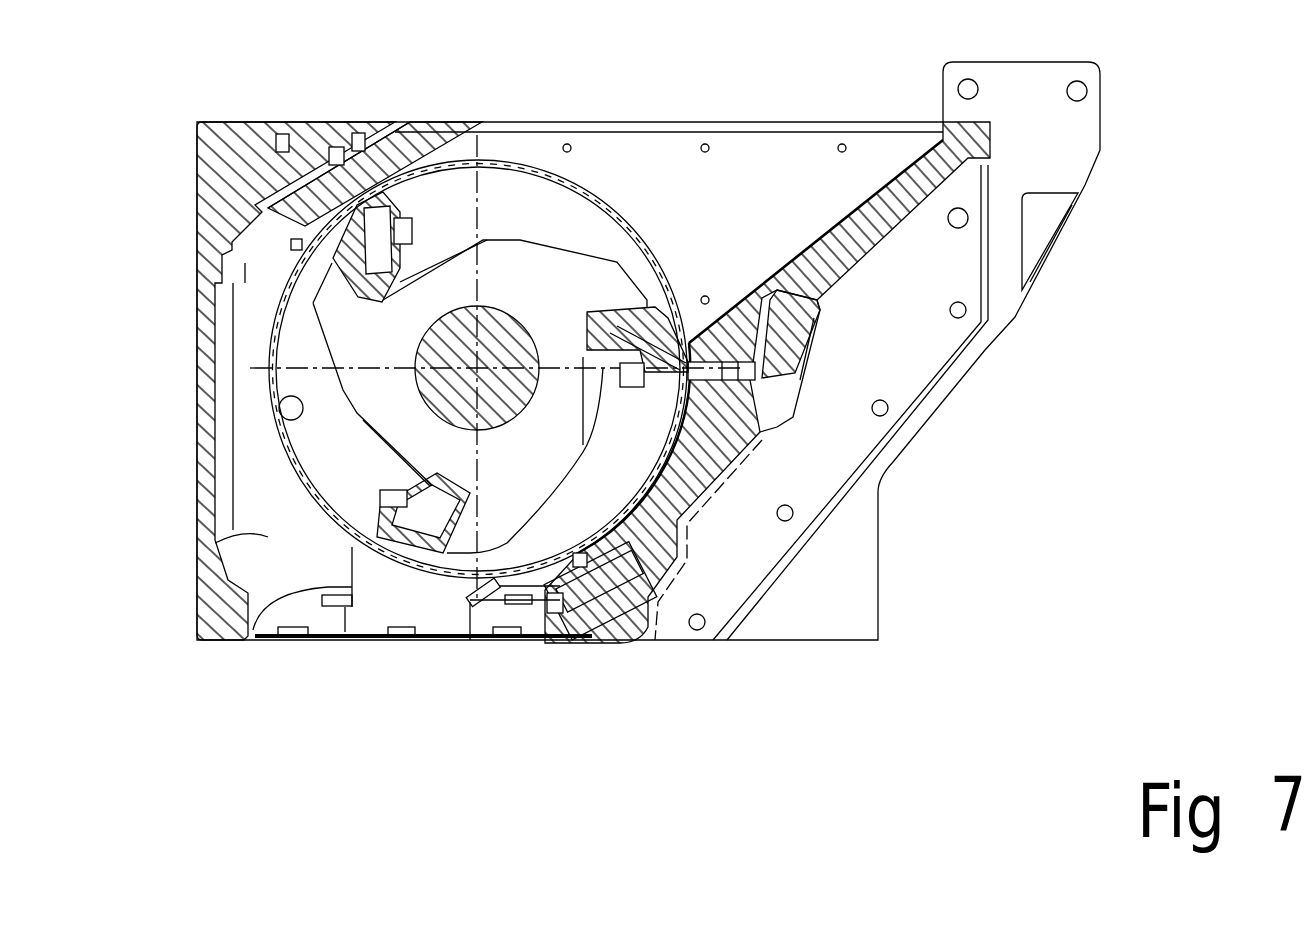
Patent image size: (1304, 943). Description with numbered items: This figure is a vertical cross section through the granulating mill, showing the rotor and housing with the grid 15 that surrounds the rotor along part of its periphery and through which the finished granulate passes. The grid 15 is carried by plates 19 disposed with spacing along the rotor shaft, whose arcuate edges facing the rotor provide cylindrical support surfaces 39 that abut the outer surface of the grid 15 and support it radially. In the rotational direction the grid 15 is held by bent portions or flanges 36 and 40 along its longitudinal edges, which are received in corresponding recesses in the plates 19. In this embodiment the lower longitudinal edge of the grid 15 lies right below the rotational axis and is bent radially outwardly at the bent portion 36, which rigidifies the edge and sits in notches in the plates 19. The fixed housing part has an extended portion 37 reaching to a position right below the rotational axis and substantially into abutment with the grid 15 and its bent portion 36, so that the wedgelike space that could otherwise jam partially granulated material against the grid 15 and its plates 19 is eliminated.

The grid 15 is at (300, 427).
The plates 19 is at (268, 536).
The bent portion 36 is at (480, 584).
The extended portion 37 is at (533, 580).
The cylindrical support surfaces 39 is at (267, 385).
The flange 40 is at (296, 240).